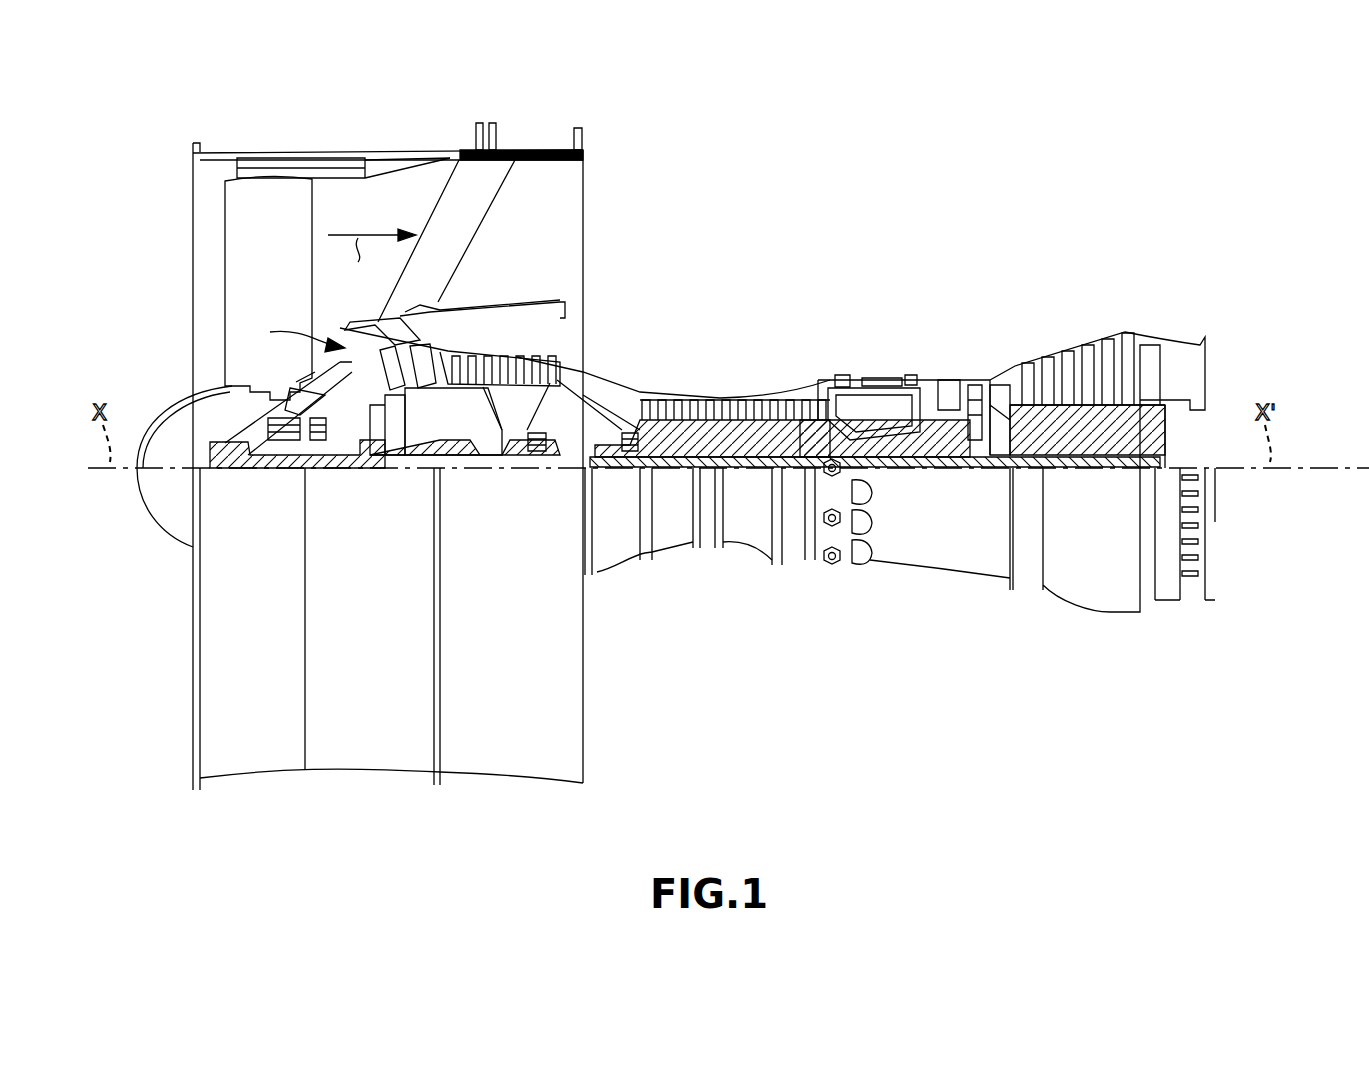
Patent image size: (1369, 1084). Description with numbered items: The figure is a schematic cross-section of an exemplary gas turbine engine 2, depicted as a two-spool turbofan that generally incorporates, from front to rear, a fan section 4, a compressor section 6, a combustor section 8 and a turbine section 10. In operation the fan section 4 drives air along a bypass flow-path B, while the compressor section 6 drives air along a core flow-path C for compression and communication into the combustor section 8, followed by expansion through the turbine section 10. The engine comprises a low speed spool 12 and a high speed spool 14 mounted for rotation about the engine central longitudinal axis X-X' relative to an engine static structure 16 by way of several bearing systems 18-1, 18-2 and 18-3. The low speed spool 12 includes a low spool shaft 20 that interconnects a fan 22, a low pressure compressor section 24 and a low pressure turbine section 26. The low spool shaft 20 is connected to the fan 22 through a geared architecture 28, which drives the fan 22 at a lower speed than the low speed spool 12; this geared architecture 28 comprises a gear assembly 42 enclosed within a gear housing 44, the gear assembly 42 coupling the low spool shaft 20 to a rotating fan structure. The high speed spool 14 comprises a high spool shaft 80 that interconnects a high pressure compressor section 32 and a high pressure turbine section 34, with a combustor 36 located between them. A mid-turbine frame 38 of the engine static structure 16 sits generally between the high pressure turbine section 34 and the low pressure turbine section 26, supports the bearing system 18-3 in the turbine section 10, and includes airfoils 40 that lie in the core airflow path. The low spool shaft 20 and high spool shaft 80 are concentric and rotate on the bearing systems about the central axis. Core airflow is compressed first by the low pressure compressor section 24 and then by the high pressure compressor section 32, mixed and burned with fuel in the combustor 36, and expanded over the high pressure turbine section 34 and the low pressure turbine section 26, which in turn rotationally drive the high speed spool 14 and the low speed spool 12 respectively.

The gas turbine engine 2 is at (928, 186).
The fan section 4 is at (433, 129).
The compressor section 6 is at (443, 264).
The combustor section 8 is at (928, 264).
The turbine section 10 is at (1147, 264).
The low speed spool 12 is at (752, 490).
The high speed spool 14 is at (792, 432).
The engine static structure 16 is at (368, 752).
The bearing system 18-1 is at (280, 452).
The bearing system 18-2 is at (535, 465).
The bearing system 18-3 is at (988, 462).
The low spool shaft 20 is at (604, 468).
The fan 22 is at (268, 288).
The low pressure compressor section 24 is at (525, 358).
The low pressure turbine section 26 is at (1062, 358).
The geared architecture 28 is at (398, 486).
The high pressure compressor section 32 is at (735, 430).
The high pressure turbine section 34 is at (940, 390).
The combustor 36 is at (872, 402).
The mid-turbine frame 38 is at (975, 398).
The airfoils 40 is at (995, 392).
The gear assembly 42 is at (436, 466).
The gear housing 44 is at (398, 419).
The high spool shaft 80 is at (880, 462).